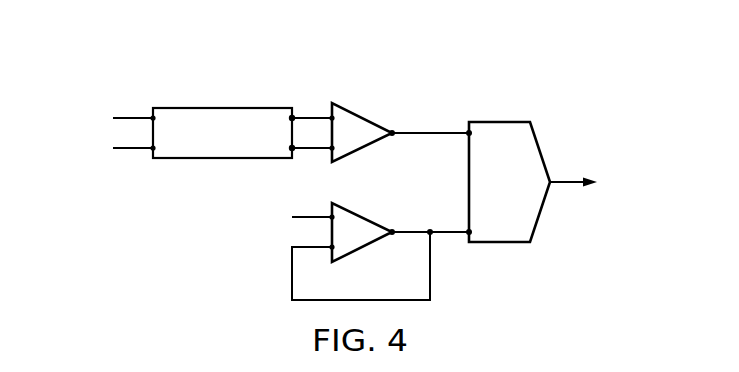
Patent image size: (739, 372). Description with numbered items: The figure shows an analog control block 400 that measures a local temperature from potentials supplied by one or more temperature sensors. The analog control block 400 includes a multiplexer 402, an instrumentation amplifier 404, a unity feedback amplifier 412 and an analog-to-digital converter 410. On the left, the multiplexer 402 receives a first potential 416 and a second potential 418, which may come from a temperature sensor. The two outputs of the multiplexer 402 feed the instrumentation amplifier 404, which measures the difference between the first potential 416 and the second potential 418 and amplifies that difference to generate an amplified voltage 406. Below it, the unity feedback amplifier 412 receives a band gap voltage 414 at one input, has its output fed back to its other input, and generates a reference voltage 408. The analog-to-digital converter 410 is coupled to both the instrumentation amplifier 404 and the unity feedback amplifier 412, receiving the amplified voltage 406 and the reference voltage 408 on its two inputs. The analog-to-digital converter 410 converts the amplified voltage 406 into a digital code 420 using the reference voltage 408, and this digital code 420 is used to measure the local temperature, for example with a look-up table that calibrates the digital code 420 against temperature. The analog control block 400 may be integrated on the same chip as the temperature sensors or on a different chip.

The analog control block 400 is at (420, 53).
The multiplexer 402 is at (222, 108).
The instrumentation amplifier (IA) 404 is at (361, 115).
The amplified voltage 406 is at (430, 132).
The reference voltage 408 is at (450, 236).
The analog-to-digital converter (ADC) 410 is at (500, 122).
The unity feedback amplifier (UA) 412 is at (360, 249).
The band gap voltage VBG 414 is at (263, 237).
The first potential VBE1 416 is at (83, 98).
The second potential VBE2 418 is at (83, 167).
The digital code 420 is at (567, 178).